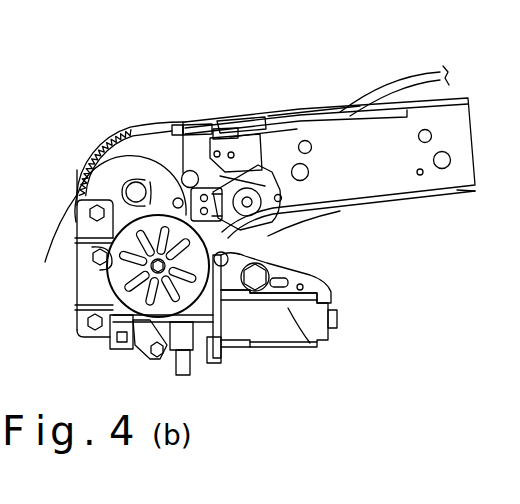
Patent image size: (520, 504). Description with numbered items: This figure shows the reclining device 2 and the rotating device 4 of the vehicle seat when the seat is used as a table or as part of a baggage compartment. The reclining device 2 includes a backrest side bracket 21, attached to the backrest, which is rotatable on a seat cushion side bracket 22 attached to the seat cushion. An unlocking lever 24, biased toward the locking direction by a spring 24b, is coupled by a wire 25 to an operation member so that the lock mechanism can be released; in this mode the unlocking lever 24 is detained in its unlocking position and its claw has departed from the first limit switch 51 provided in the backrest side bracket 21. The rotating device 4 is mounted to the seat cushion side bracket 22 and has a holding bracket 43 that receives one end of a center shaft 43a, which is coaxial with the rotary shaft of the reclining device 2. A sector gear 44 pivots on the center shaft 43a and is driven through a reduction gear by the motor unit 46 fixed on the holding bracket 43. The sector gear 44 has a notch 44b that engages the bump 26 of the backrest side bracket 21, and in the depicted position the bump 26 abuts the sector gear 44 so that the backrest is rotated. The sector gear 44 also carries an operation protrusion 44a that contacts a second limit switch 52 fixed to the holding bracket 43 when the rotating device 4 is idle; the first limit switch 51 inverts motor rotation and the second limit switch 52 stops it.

The reclining device 2 is at (405, 218).
The rotating device 4 is at (263, 367).
The backrest side bracket 21 is at (440, 172).
The seat cushion side bracket 22 is at (312, 280).
The unlocking lever 24 is at (258, 122).
The spring 24b is at (285, 116).
The wire 25 is at (376, 84).
The bump 26 is at (189, 170).
The holding bracket 43 is at (117, 177).
The center shaft 43a is at (128, 197).
The sector gear 44 is at (97, 143).
The operation protrusion 44a is at (258, 243).
The notch 44b is at (177, 175).
The motor unit 46 is at (313, 343).
The first limit switch 51 is at (222, 150).
The second limit switch 52 is at (303, 223).